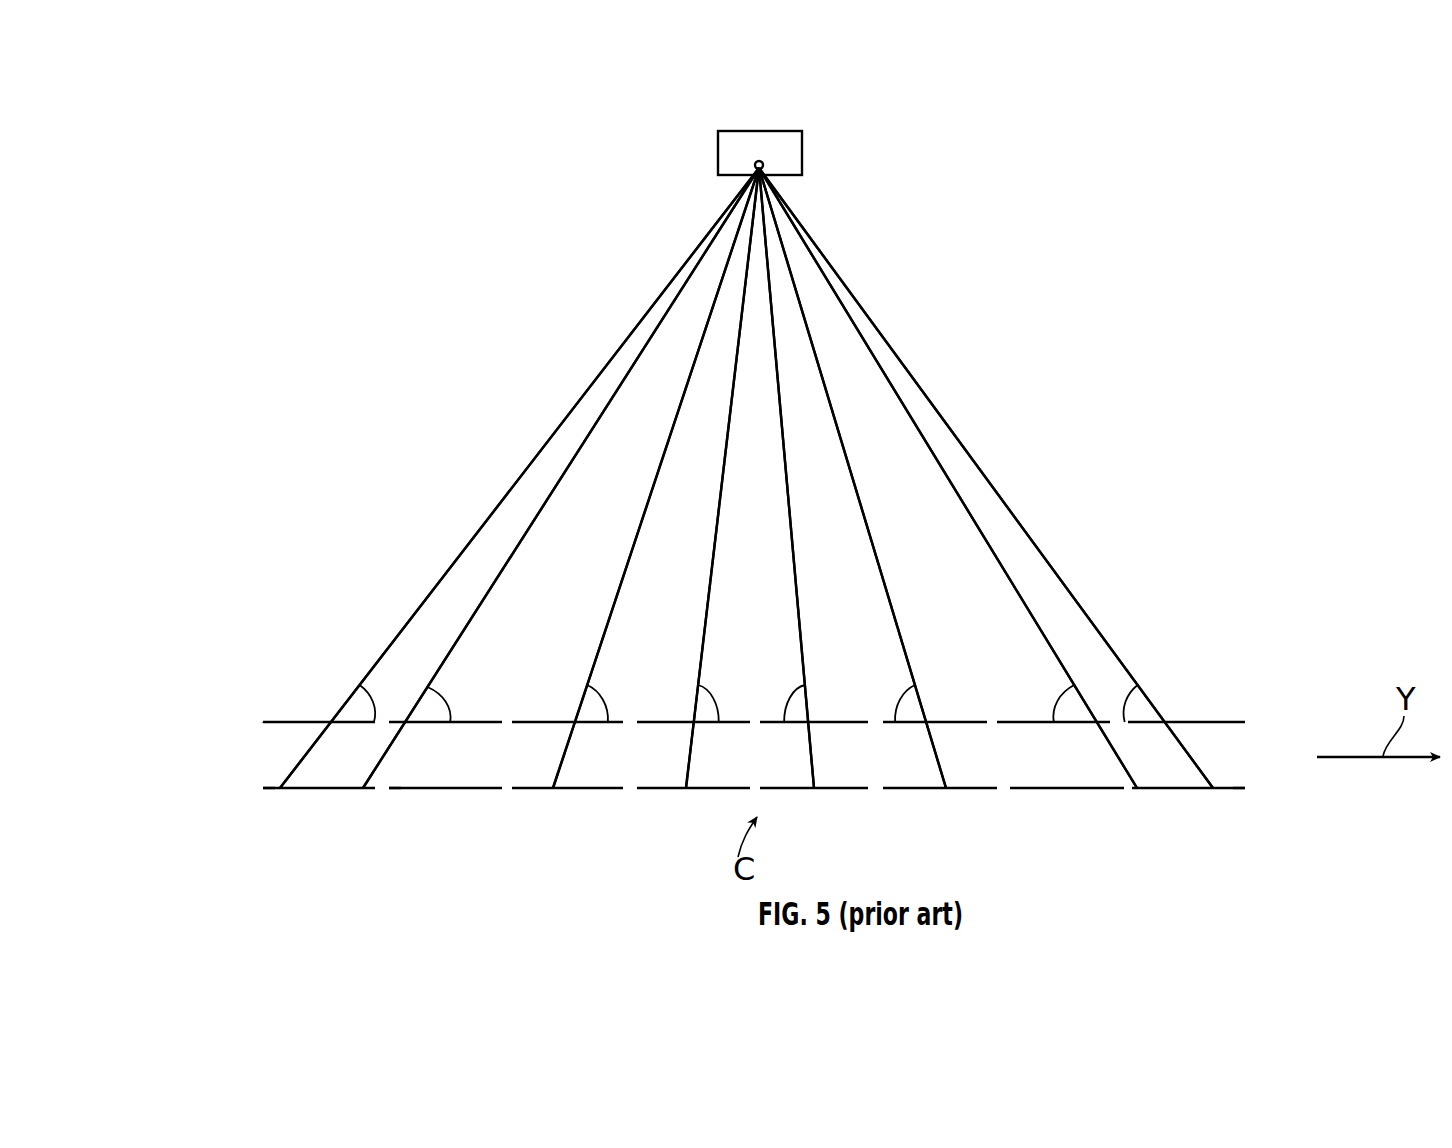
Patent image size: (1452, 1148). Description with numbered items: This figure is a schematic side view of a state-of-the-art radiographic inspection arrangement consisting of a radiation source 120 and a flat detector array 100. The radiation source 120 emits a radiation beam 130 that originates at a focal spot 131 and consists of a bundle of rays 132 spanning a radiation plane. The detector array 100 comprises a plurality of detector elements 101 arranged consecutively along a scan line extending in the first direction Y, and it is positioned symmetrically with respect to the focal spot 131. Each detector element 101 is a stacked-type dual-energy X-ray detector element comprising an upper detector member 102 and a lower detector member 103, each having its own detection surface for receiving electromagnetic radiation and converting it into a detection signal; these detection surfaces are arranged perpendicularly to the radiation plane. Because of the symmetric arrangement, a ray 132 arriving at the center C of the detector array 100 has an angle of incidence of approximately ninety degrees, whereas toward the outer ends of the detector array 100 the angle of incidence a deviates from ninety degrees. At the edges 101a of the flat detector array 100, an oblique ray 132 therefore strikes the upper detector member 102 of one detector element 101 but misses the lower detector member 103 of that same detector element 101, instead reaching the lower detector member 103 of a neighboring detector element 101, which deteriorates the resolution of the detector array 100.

The detector array 100 is at (192, 668).
The detector element 101 is at (328, 790).
The edge of the detector array 101a is at (250, 753).
The upper detector member 102 is at (280, 720).
The lower detector member 103 is at (270, 790).
The radiation source 120 is at (758, 130).
The radiation beam 130 is at (613, 352).
The focal spot 131 is at (765, 168).
The ray 132 is at (440, 580).